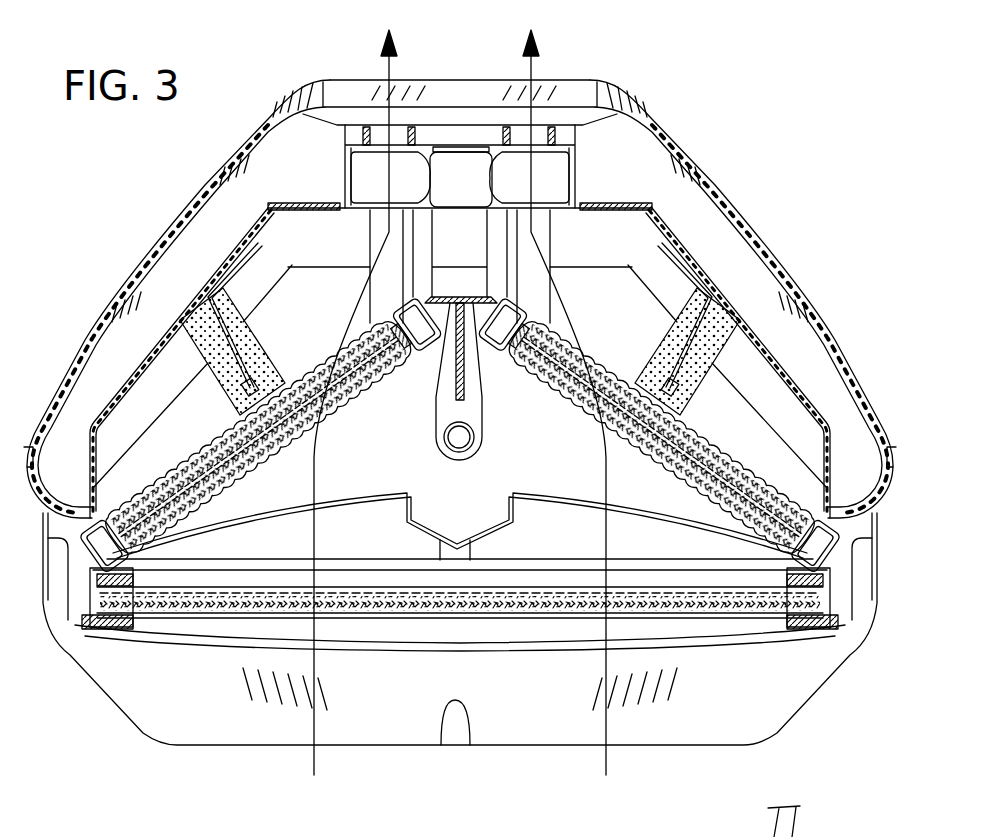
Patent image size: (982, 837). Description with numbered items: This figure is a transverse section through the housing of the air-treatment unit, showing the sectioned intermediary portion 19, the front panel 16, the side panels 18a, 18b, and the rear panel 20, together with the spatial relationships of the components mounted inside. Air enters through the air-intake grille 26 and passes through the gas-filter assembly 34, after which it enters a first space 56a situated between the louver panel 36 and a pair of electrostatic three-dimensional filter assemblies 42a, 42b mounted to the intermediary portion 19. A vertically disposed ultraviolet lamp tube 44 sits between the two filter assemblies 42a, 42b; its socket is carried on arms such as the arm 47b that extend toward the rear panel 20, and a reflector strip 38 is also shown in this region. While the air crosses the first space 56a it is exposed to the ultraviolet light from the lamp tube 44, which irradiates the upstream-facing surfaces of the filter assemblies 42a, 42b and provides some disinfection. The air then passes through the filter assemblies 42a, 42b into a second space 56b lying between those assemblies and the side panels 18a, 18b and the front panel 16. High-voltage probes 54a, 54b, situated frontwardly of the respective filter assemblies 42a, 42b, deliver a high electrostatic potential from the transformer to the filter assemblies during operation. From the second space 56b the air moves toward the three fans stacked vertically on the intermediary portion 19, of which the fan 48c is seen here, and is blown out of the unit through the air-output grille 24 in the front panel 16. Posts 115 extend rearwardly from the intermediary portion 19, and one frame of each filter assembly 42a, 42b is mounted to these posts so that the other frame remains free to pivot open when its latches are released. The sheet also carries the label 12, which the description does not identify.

The housing 12 is at (343, 92).
The front panel 16 is at (583, 120).
The side panel 18a is at (758, 263).
The side panel 18b is at (180, 240).
The intermediary portion 19 is at (127, 378).
The rear panel 20 is at (363, 653).
The air-output grille 24 is at (463, 127).
The air-intake grille 26 is at (482, 653).
The gas-filter assembly 34 is at (255, 613).
The louver panel 36 is at (665, 580).
The reflector strip 38 is at (507, 515).
The E3D filter assembly 42a is at (678, 478).
The E3D filter assembly 42b is at (237, 480).
The UV lamp tube 44 is at (443, 443).
The arm 47b is at (474, 403).
The fan 48c is at (453, 187).
The high-voltage probe 54a is at (715, 345).
The high-voltage probe 54b is at (205, 342).
The first space 56a is at (390, 485).
The second space 56b is at (642, 333).
The posts 115 is at (405, 263).